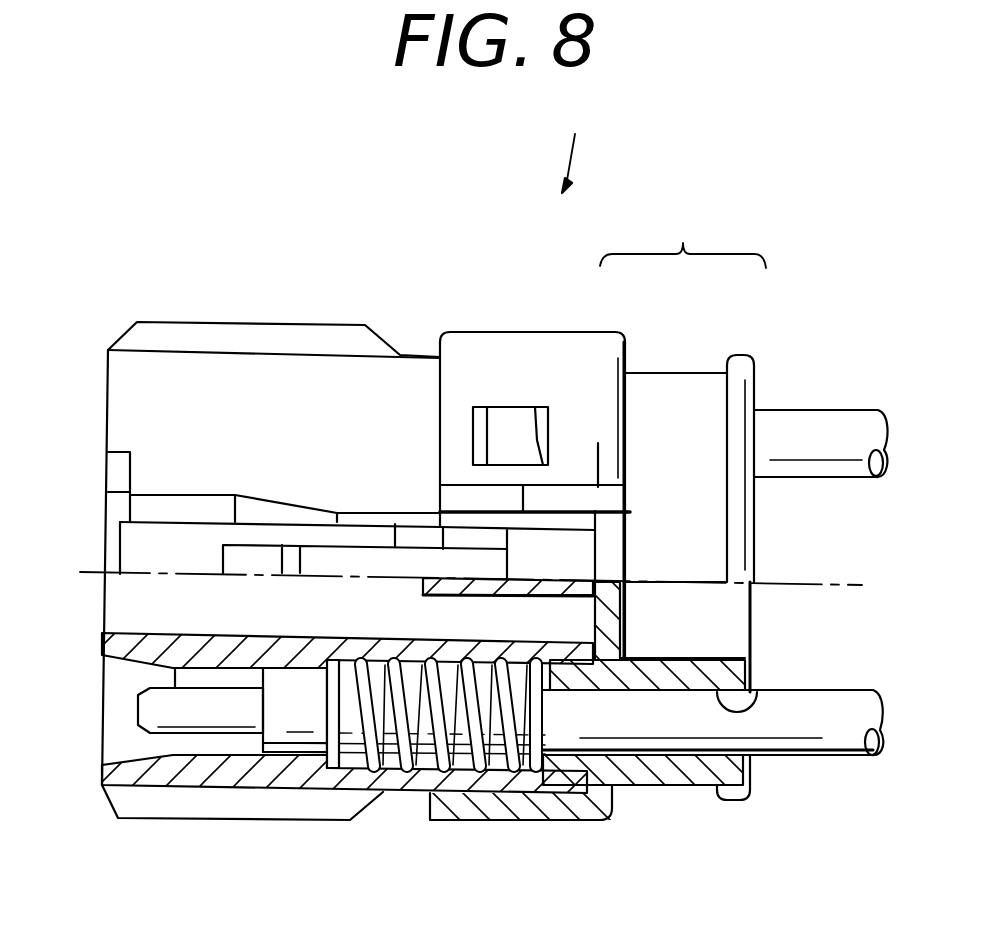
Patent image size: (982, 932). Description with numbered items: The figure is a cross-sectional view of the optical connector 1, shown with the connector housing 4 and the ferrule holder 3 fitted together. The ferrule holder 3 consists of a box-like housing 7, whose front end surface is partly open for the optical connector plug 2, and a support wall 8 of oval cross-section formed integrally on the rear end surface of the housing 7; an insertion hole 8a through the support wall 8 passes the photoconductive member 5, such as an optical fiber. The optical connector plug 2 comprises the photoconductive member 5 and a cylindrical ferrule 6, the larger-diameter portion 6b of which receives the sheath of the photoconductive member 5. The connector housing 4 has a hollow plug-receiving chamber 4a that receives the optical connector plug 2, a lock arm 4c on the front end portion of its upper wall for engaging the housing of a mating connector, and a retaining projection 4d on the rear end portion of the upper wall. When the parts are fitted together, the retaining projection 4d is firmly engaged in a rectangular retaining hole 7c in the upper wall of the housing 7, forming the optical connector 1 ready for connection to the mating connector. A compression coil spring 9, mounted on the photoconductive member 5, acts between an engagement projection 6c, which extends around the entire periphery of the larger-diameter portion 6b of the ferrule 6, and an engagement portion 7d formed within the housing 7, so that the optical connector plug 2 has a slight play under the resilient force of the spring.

The optical connector 1 is at (573, 147).
The optical connector plug 2 is at (137, 733).
The ferrule holder 3 is at (683, 236).
The connector housing 4 is at (220, 372).
The plug-receiving chamber 4a is at (185, 745).
The lock arm 4c is at (187, 503).
The retaining projection 4d is at (520, 420).
The photoconductive member 5 is at (817, 425).
The ferrule 6 is at (212, 740).
The larger-diameter portion 6b is at (277, 744).
The engagement projection 6c is at (329, 766).
The housing 7 is at (607, 338).
The retaining hole 7c is at (480, 407).
The engagement portion 7d is at (570, 775).
The support wall 8 is at (700, 387).
The insertion hole 8a is at (758, 690).
The compression coil spring 9 is at (467, 745).